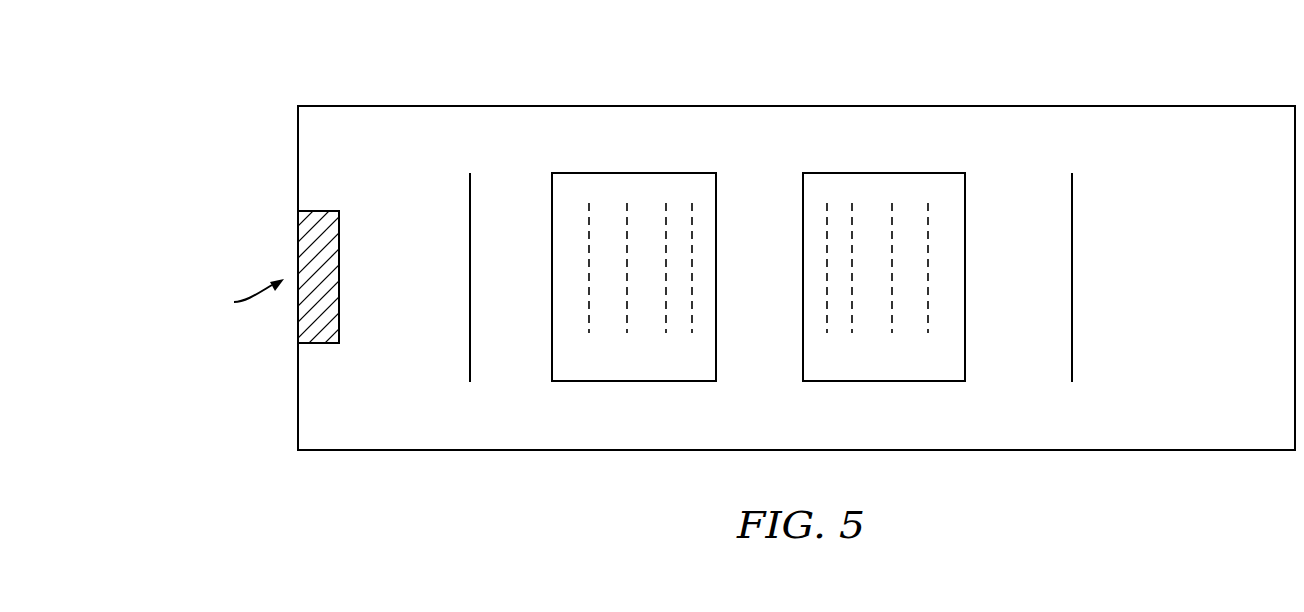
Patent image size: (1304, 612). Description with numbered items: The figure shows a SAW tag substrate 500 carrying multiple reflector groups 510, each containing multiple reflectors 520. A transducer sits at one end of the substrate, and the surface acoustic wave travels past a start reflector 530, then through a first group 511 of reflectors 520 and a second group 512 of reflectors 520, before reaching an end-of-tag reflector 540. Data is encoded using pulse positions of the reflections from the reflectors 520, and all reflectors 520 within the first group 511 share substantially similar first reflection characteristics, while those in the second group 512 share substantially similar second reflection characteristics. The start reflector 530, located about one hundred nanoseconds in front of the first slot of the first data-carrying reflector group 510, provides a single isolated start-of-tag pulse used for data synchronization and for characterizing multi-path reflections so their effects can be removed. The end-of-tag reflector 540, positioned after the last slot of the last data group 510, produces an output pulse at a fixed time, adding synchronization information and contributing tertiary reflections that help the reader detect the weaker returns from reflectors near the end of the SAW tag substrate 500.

The SAW tag substrate 500 is at (508, 490).
The reflector group 510 is at (758, 232).
The first group of reflectors 511 is at (656, 173).
The second group of reflectors 512 is at (923, 173).
The reflector 520 is at (692, 362).
The start reflector 530 is at (455, 260).
The end-of-tag reflector 540 is at (1090, 276).